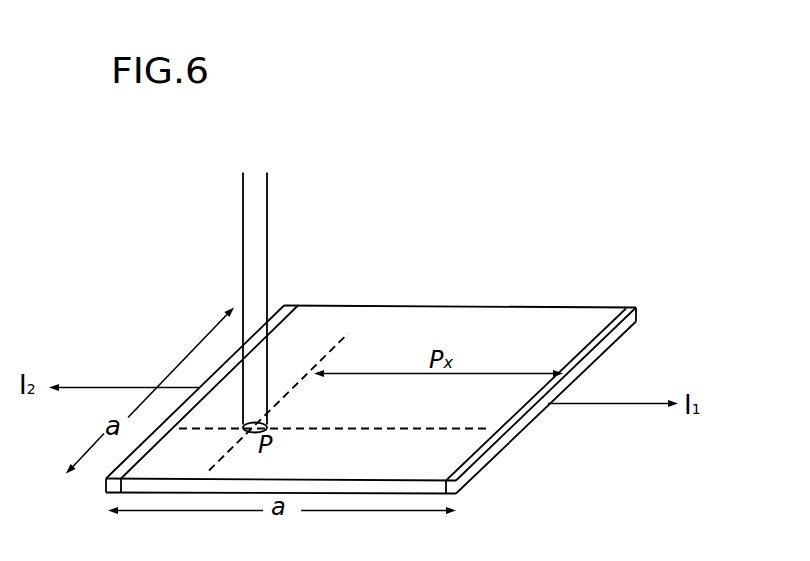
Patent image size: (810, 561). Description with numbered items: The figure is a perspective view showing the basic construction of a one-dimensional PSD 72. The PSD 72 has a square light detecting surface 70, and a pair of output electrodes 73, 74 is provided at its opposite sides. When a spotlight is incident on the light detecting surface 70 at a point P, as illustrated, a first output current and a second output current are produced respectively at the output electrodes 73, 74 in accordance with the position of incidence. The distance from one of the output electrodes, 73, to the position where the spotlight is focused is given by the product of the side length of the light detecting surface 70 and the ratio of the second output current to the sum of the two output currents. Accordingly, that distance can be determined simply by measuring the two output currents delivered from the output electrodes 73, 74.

The light detecting surface 70 is at (391, 325).
The one-dimensional PSD 72 is at (510, 230).
The output electrode 73 is at (627, 307).
The output electrode 74 is at (283, 305).